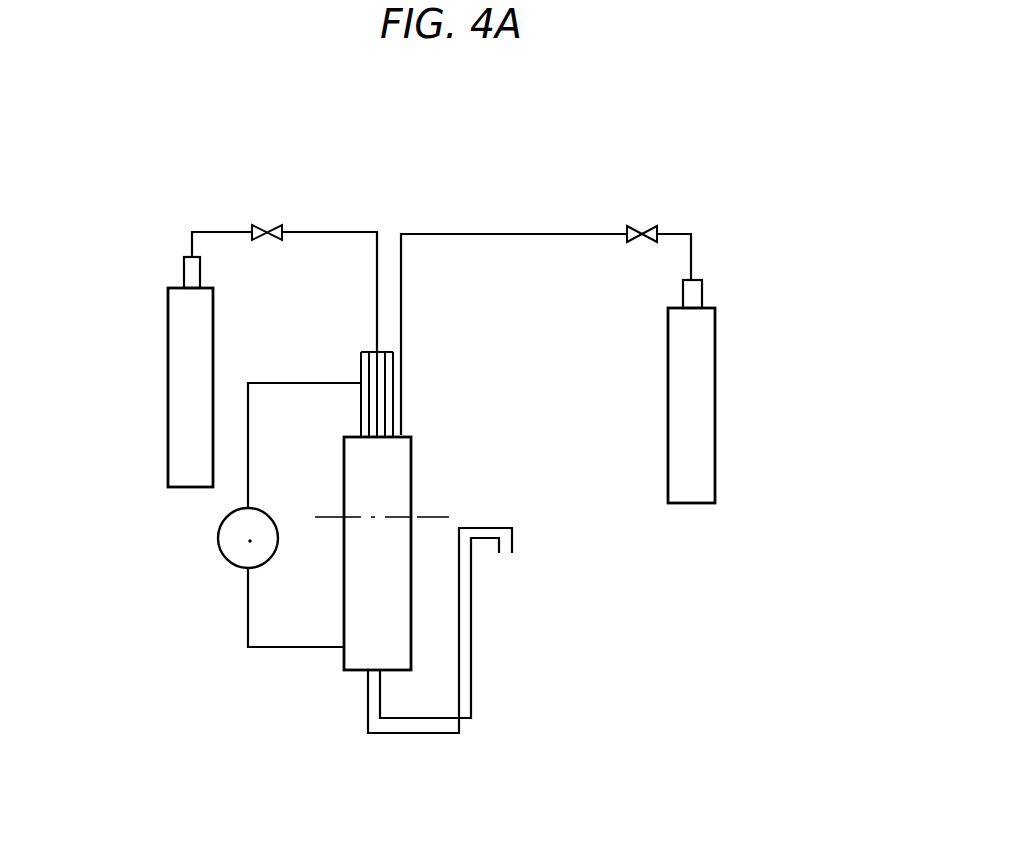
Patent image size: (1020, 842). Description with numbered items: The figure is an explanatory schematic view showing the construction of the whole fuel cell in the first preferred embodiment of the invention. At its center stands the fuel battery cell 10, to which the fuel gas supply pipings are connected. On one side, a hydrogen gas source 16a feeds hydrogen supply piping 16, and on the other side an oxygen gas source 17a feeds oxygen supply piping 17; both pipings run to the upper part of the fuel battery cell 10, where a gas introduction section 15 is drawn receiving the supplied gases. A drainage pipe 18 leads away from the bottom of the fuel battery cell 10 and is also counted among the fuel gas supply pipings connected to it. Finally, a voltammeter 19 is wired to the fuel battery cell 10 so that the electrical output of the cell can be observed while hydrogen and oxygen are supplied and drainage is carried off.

The fuel battery cell 10 is at (365, 596).
The gas introduction section 15 is at (393, 363).
The hydrogen supply piping 16 is at (525, 234).
The hydrogen gas source 16a is at (705, 373).
The oxygen supply piping 17 is at (323, 232).
The oxygen gas source 17a is at (200, 315).
The drainage pipe 18 is at (471, 630).
The voltammeter 19 is at (228, 567).